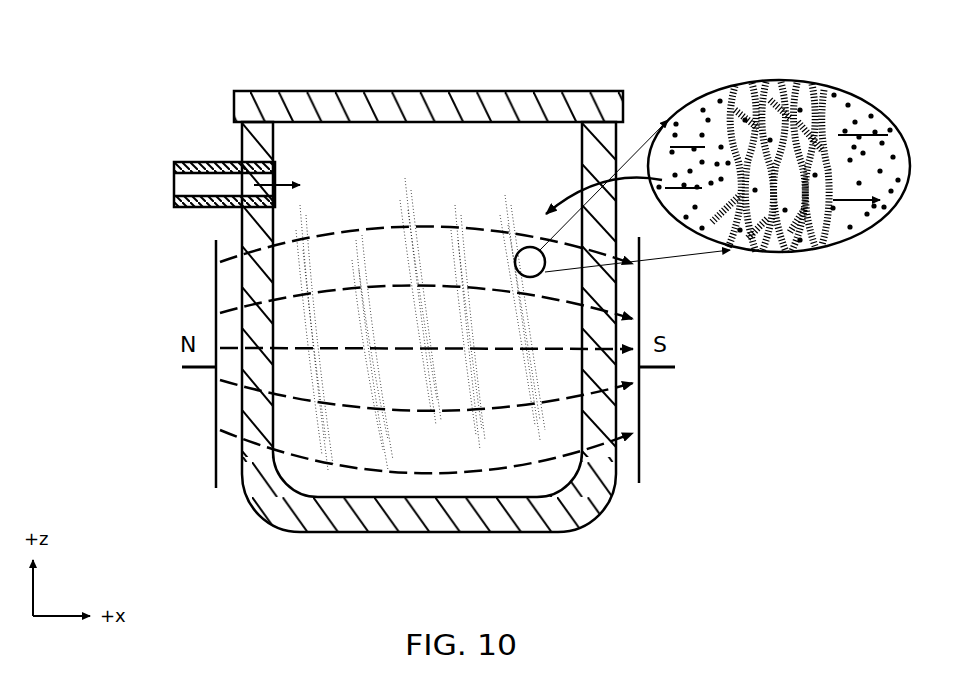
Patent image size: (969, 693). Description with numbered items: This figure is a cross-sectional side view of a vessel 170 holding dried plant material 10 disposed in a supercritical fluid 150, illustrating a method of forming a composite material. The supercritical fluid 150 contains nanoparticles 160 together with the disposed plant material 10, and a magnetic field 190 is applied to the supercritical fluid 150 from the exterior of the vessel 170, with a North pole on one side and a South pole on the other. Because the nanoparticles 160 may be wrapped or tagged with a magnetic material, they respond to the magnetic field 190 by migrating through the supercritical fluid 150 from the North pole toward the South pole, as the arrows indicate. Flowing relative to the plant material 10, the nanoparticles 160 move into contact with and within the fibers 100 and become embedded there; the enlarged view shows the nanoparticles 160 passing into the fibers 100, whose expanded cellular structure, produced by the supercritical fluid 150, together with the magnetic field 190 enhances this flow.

The plant material 10 is at (380, 453).
The fibers 100 is at (728, 93).
The supercritical fluid 150 is at (170, 184).
The nanoparticles 160 is at (807, 240).
The vessel 170 is at (340, 88).
The magnetic field 190 is at (424, 473).